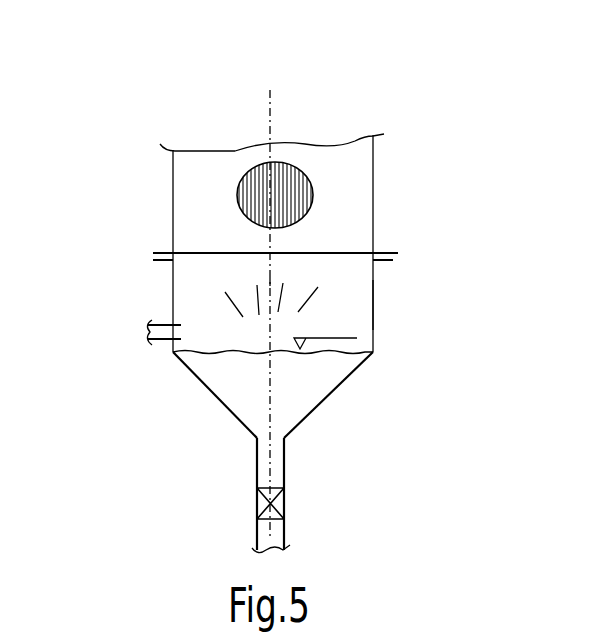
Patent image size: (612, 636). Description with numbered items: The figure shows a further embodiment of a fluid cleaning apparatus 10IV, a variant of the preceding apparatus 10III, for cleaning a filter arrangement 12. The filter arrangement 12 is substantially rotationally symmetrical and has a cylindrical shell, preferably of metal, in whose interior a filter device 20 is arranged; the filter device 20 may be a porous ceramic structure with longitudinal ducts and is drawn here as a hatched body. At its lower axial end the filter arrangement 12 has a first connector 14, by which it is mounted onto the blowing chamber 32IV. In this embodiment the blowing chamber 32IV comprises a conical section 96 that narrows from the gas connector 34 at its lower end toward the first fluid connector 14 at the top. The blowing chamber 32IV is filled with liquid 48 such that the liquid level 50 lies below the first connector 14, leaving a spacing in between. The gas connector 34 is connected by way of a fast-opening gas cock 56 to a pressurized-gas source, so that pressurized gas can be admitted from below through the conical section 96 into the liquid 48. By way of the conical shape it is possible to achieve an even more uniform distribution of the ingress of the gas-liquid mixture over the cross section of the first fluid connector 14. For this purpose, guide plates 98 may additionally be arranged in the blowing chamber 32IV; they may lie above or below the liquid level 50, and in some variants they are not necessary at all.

The fluid cleaning apparatus 10IV is at (373, 120).
The apparatus (third embodiment) 10III is at (24, 96).
The filter arrangement 12 is at (374, 193).
The first connector 14 is at (210, 254).
The filter device 20 is at (238, 188).
The blowing chamber 32IV is at (375, 300).
The gas connector 34 is at (275, 462).
The liquid 48 is at (240, 376).
The liquid level 50 is at (333, 328).
The fast-opening gas cock 56 is at (275, 503).
The conical section 96 is at (340, 386).
The guide plates 98 is at (230, 300).